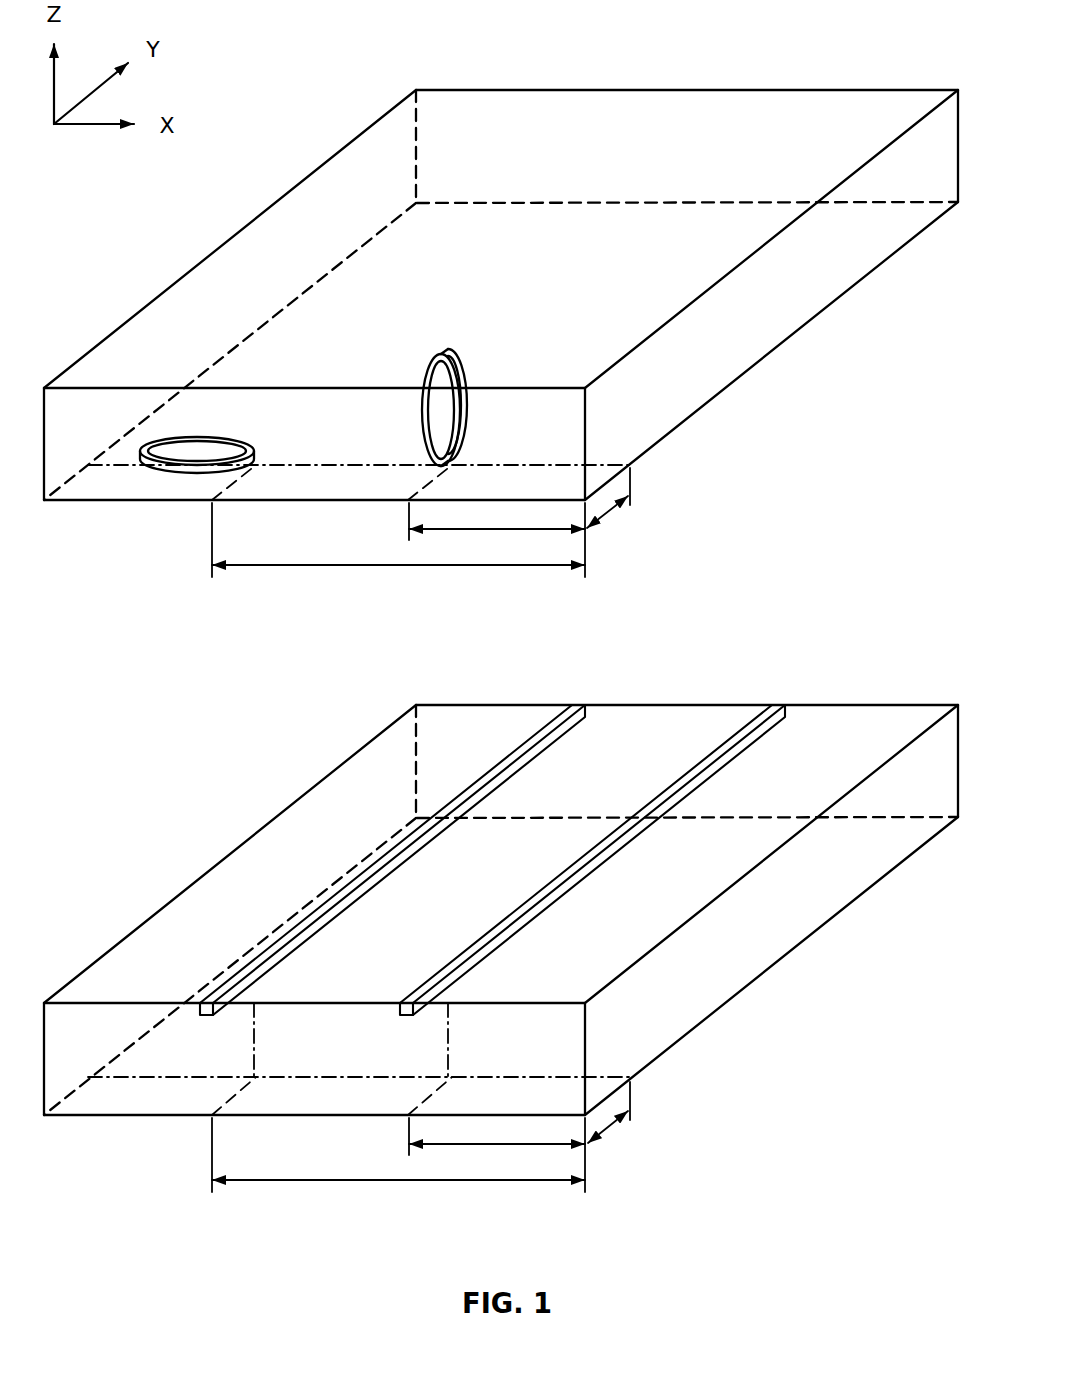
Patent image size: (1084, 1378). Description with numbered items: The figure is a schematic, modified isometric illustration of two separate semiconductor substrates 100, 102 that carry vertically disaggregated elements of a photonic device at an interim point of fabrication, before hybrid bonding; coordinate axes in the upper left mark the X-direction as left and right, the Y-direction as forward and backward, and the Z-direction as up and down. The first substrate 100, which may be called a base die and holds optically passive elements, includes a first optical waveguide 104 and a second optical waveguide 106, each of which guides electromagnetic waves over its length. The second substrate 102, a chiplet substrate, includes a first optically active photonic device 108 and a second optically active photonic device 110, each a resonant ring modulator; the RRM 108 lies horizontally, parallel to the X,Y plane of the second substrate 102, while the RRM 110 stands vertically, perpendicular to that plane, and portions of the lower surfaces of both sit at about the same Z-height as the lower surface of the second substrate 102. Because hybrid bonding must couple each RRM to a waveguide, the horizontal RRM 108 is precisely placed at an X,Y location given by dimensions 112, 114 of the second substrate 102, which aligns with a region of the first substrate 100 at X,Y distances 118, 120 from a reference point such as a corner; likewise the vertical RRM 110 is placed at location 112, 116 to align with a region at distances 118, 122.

The first substrate 100 is at (753, 983).
The second substrate 102 is at (668, 90).
The first optical waveguide 104 is at (575, 705).
The second optical waveguide 106 is at (777, 705).
The first optically active photonic device 108 is at (176, 482).
The second optically active photonic device 110 is at (445, 352).
The X location 112 is at (617, 507).
The Y location 114 is at (398, 554).
The Y location 116 is at (497, 532).
The X distance 118 is at (617, 1122).
The Y distance 120 is at (398, 1170).
The Y distance 122 is at (497, 1146).